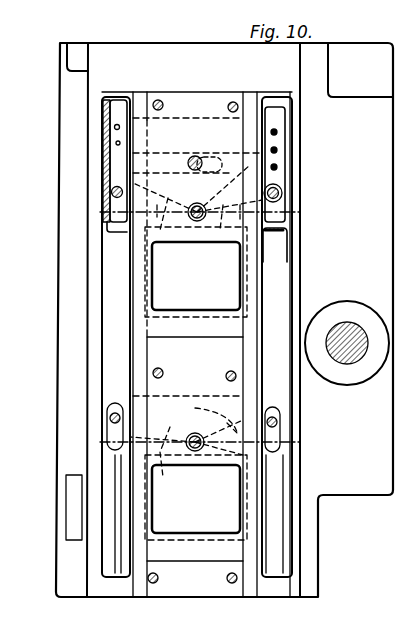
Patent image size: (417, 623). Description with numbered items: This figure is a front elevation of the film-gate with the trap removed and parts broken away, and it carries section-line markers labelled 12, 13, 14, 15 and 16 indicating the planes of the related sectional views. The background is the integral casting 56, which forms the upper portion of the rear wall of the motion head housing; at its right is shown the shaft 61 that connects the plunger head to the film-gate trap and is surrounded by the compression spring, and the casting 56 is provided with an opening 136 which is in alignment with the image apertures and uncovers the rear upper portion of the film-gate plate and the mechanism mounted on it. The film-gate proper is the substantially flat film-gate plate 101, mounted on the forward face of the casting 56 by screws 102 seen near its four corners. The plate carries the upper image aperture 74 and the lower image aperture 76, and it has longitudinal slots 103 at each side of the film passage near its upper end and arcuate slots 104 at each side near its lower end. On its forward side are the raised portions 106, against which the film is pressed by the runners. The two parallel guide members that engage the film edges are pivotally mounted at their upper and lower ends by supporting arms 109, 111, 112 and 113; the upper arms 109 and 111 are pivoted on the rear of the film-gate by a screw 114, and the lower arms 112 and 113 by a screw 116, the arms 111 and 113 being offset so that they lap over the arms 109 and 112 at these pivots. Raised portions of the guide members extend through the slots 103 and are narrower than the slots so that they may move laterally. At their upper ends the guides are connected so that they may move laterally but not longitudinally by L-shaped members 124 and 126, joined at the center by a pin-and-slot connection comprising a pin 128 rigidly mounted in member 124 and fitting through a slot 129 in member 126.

The integral casting 56 is at (382, 37).
The film-gate plate 101 is at (228, 107).
The screws 102 is at (161, 104).
The longitudinal slots 103 is at (102, 217).
The arcuate slots 104 is at (102, 435).
The raised portions 106 is at (240, 348).
The supporting arm 109 is at (222, 227).
The supporting arm 111 is at (200, 247).
The supporting arm 112 is at (196, 408).
The supporting arm 113 is at (196, 497).
The screw 114 is at (174, 296).
The screw 116 is at (198, 448).
The L-shaped member 124 is at (240, 170).
The L-shaped member 126 is at (163, 153).
The pin 128 is at (188, 163).
The slot 129 is at (207, 156).
The opening 136 is at (250, 265).
The shaft 61 is at (347, 363).
The image aperture 74 is at (218, 317).
The image aperture 76 is at (196, 467).
The section line 12 is at (195, 607).
The section line 13 is at (118, 607).
The section line 14 is at (41, 198).
The section line 15 is at (41, 284).
The section line 16 is at (43, 167).